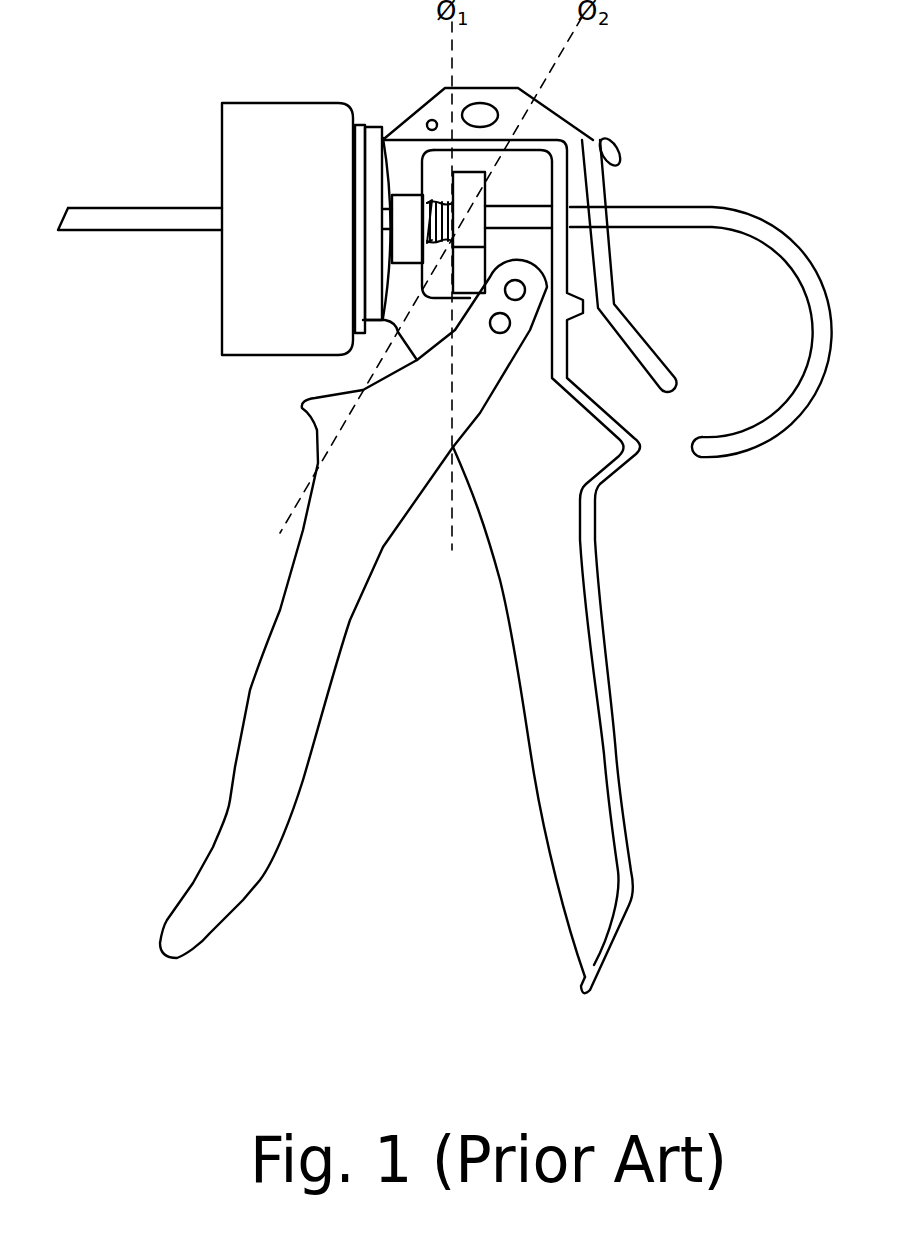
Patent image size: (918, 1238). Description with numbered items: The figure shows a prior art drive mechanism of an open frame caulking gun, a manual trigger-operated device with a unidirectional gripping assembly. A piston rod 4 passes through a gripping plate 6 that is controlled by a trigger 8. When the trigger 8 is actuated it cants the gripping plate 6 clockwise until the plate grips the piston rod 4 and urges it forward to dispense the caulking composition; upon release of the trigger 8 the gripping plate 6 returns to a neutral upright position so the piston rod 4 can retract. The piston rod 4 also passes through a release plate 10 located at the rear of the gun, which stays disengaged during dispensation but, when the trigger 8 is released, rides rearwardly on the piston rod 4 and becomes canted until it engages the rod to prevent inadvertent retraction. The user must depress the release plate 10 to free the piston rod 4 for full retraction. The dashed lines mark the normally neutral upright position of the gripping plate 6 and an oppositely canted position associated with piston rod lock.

The piston rod 4 is at (83, 208).
The gripping plate 6 is at (487, 202).
The trigger 8 is at (310, 757).
The release plate 10 is at (638, 337).